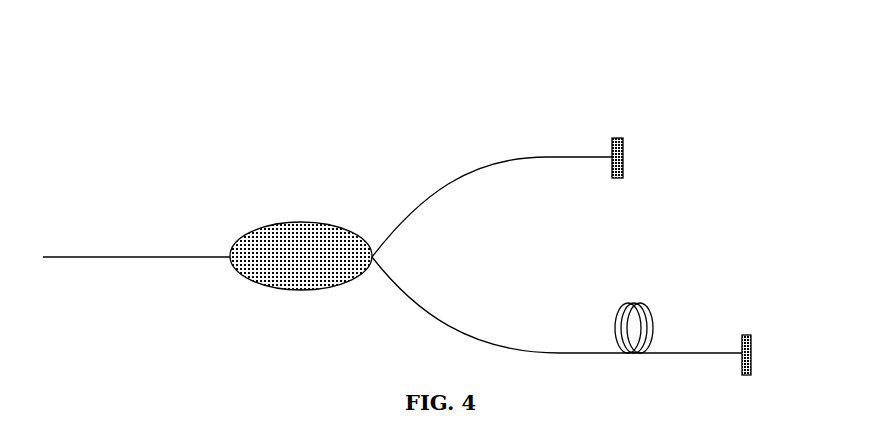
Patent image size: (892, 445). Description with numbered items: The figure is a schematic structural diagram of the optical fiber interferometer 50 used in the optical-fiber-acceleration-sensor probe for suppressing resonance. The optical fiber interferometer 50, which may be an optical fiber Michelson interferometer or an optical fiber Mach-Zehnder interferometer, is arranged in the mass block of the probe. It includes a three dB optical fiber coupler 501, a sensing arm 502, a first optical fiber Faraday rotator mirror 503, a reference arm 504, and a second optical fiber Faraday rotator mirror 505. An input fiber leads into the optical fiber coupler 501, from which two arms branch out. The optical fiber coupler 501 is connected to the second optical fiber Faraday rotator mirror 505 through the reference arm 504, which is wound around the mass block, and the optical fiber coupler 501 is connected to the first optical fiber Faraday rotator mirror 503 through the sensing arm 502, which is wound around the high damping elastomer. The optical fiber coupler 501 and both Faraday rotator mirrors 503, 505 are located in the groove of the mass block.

The optical fiber interferometer 50 is at (420, 92).
The 3 dB optical fiber coupler 501 is at (302, 222).
The sensing arm 502 is at (640, 302).
The first optical fiber Faraday rotator mirror 503 is at (748, 334).
The reference arm 504 is at (472, 170).
The second optical fiber Faraday rotator mirror 505 is at (620, 139).